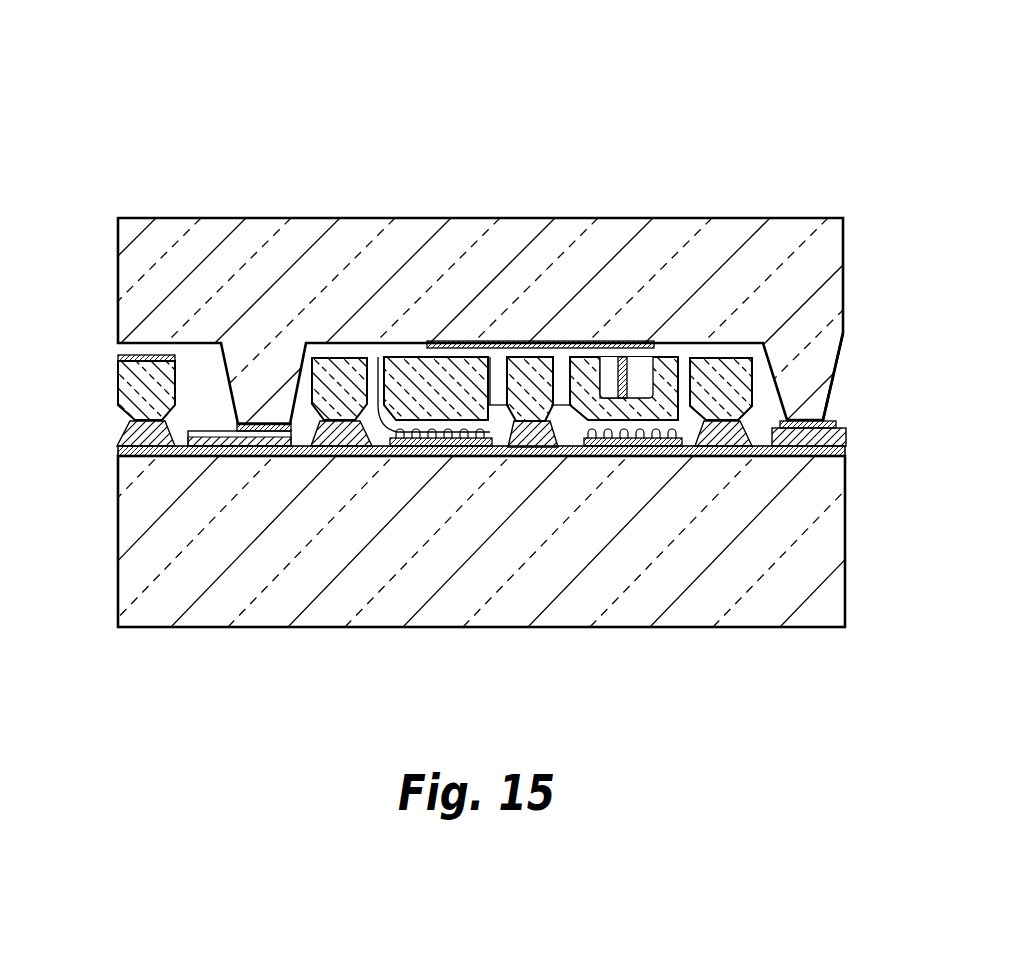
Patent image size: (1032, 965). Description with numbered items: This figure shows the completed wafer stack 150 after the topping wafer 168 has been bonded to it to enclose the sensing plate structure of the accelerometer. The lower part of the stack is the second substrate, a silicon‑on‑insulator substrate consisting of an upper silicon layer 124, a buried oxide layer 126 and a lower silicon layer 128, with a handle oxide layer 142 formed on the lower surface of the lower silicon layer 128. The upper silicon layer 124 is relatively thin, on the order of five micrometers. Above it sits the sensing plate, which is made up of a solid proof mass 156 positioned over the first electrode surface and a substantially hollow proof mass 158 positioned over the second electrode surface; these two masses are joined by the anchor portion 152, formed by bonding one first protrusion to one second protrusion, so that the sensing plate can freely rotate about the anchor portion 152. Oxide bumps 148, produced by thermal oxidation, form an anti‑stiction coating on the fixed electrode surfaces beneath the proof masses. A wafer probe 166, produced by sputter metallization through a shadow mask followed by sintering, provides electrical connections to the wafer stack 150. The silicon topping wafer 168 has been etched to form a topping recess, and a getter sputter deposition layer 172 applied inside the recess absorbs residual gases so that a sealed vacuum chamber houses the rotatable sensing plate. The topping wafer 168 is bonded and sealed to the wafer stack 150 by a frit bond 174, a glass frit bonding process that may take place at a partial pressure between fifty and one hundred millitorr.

The wafer stack 150 is at (200, 122).
The bumps 148 is at (377, 343).
The solid proof mass 156 is at (402, 355).
The getter sputter deposition layer 172 is at (497, 341).
The substantially hollow proof mass 158 is at (641, 358).
The topping wafer 168 is at (752, 224).
The wafer probe 166 is at (123, 354).
The frit bond 174 is at (835, 418).
The handle oxide layer 142 is at (845, 428).
The upper silicon layer 124 is at (850, 448).
The buried oxide layer 126 is at (835, 457).
The lower silicon layer 128 is at (835, 560).
The anchor portion 152 is at (521, 446).